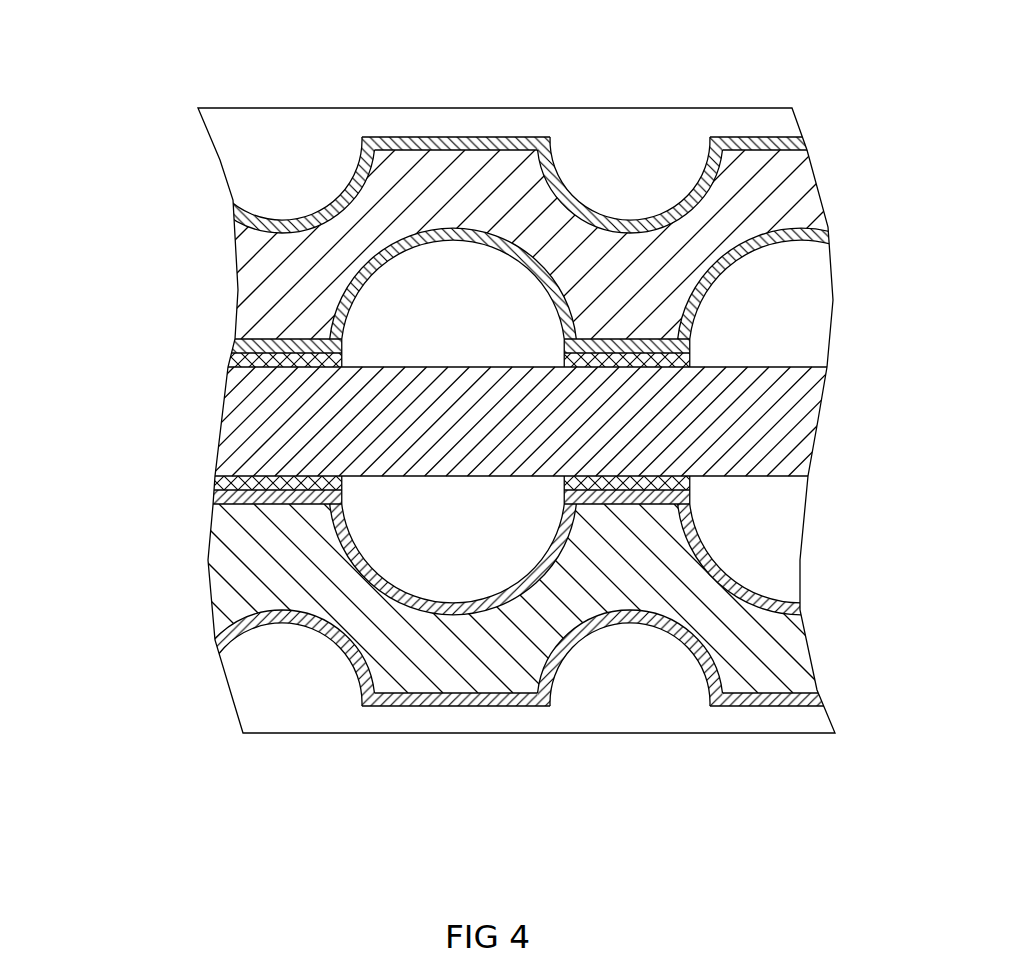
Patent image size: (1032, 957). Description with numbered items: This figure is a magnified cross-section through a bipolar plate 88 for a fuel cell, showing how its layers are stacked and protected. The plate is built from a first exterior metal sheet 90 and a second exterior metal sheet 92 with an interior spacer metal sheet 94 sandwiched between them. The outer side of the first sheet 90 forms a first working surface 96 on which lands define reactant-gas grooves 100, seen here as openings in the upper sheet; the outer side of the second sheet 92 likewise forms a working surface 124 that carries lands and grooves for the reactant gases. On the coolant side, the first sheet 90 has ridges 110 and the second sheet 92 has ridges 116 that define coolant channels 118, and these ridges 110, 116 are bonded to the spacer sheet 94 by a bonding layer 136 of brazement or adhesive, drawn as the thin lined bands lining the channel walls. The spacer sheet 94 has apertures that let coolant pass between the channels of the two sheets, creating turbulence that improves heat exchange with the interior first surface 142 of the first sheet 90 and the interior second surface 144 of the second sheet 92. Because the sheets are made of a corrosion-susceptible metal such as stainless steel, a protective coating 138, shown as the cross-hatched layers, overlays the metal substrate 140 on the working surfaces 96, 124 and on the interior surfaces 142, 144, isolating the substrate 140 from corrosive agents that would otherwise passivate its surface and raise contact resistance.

The bipolar plate 88 is at (164, 98).
The first exterior metal sheet 90 is at (797, 185).
The second exterior metal sheet 92 is at (793, 650).
The interior spacer metal sheet 94 is at (770, 418).
The first working surface 96 is at (455, 140).
The grooves 100 is at (630, 165).
The ridges 110 is at (673, 368).
The ridges 116 is at (673, 476).
The channels 118 is at (367, 513).
The working surface 124 is at (439, 712).
The bonding layer 136 is at (565, 356).
The protective coating 138 is at (237, 208).
The metal substrate 140 is at (483, 165).
The interior first surface 142 is at (624, 350).
The interior second surface 144 is at (624, 493).